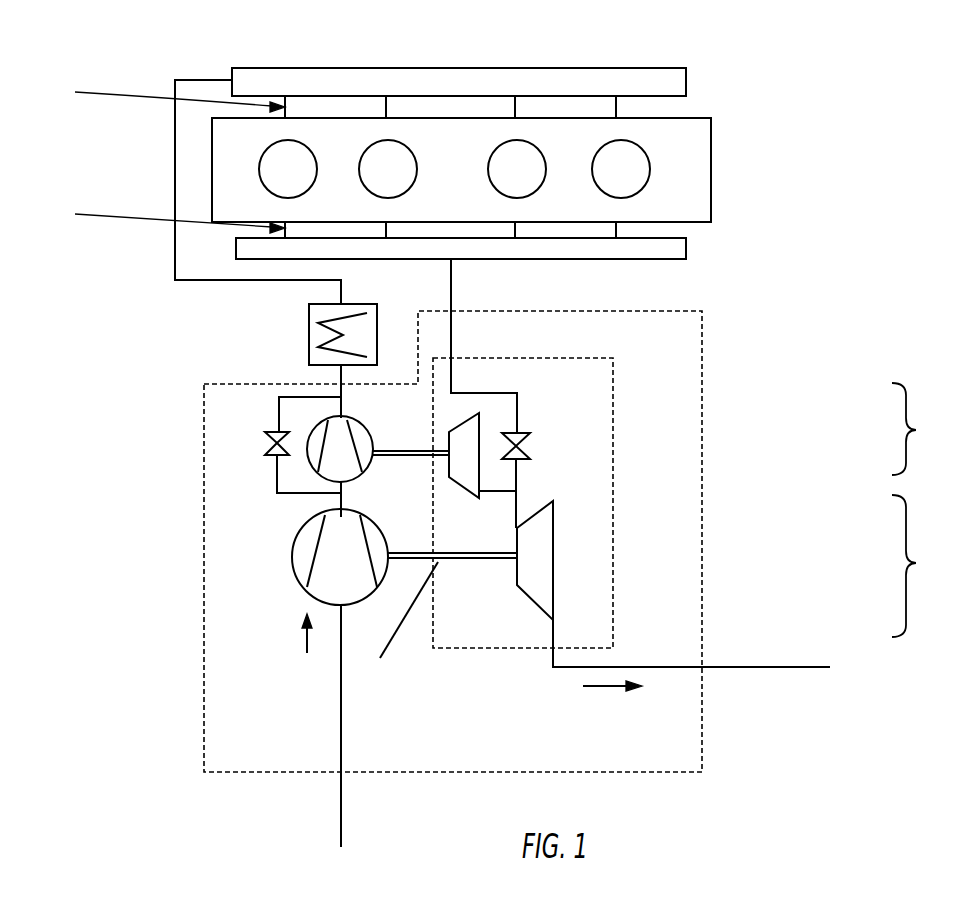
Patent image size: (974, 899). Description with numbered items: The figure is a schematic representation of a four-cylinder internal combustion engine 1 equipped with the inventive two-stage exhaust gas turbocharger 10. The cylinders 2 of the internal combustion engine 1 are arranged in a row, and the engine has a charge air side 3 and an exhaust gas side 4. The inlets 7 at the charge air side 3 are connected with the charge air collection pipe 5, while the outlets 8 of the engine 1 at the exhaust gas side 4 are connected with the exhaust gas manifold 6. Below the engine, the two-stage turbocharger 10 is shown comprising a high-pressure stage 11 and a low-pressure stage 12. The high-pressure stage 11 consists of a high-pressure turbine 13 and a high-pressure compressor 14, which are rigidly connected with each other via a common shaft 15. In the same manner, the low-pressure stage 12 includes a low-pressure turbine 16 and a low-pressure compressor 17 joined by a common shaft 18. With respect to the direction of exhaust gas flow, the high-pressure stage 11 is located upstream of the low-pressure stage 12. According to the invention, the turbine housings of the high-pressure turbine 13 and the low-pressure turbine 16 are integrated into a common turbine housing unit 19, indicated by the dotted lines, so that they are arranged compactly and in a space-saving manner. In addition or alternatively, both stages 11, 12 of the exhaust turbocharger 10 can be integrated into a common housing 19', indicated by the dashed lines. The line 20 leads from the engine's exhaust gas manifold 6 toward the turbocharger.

The internal combustion engine 1 is at (711, 140).
The cylinders 2 is at (650, 178).
The charge air side 3 is at (797, 70).
The exhaust gas side 4 is at (805, 233).
The charge air collection pipe 5 is at (460, 68).
The exhaust gas manifold 6 is at (236, 243).
The inlets 7 is at (171, 95).
The outlets 8 is at (171, 215).
The two-stage exhaust gas turbocharger 10 is at (673, 348).
The high-pressure stage 11 is at (917, 429).
The low-pressure stage 12 is at (919, 566).
The high-pressure turbine 13 is at (480, 422).
The high-pressure compressor 14 is at (310, 468).
The common shaft 15 is at (233, 466).
The low-pressure turbine 16 is at (533, 567).
The low-pressure compressor 17 is at (292, 565).
The common shaft 18 is at (247, 623).
The common turbine housing unit 19 is at (643, 503).
The common housing 19' is at (392, 541).
The exhaust line 20 is at (451, 290).